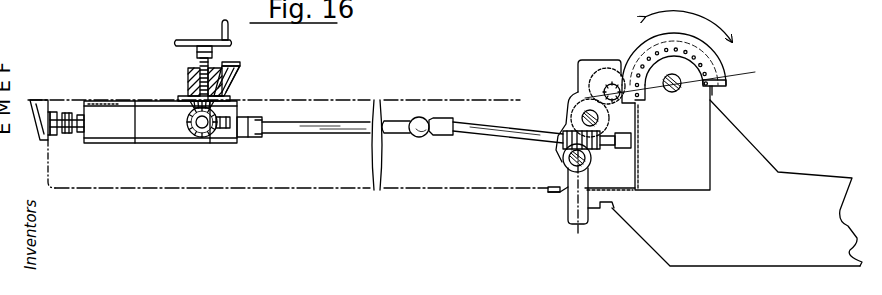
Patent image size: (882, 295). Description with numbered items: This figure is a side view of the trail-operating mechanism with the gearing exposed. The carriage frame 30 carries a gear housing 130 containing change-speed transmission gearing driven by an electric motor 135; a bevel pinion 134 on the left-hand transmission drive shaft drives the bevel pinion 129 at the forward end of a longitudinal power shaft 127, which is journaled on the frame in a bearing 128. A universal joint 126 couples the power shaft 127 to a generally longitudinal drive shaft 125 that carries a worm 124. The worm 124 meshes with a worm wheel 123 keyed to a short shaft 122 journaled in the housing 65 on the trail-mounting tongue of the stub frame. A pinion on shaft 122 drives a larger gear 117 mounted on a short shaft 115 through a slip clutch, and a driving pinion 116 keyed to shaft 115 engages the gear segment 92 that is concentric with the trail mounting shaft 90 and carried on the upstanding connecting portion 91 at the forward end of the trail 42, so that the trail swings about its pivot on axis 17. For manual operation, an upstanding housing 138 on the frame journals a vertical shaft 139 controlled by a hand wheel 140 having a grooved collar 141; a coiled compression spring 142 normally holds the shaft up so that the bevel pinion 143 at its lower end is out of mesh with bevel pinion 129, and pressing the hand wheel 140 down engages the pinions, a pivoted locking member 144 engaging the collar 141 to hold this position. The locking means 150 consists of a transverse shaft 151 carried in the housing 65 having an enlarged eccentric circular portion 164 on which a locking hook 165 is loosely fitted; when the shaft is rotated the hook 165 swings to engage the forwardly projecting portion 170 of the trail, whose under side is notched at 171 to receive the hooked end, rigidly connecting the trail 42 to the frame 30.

The axis 17 is at (673, 157).
The carriage frame 30 is at (350, 192).
The trail 42 is at (800, 170).
The housing 65 is at (582, 62).
The short shaft 90 is at (679, 89).
The connecting portion 91 is at (713, 87).
The gear segment 92 is at (734, 34).
The short shaft 115 is at (622, 107).
The driving pinion 116 is at (614, 82).
The larger gear 117 is at (600, 80).
The short shaft 122 is at (588, 110).
The worm wheel 123 is at (582, 115).
The worm 124 is at (608, 150).
The drive shaft 125 is at (484, 135).
The universal joint 126 is at (419, 137).
The power shaft 127 is at (318, 133).
The bearing 128 is at (258, 137).
The bevel pinion 129 is at (218, 143).
The gear housing 130 is at (100, 143).
The bevel pinion 134 is at (205, 143).
The electric motor 135 is at (40, 104).
The upstanding housing 138 is at (188, 83).
The vertical shaft 139 is at (222, 84).
The hand wheel 140 is at (188, 40).
The grooved collar 141 is at (213, 42).
The coiled compression spring 142 is at (190, 70).
The bevel pinion 143 is at (192, 104).
The locking member 144 is at (230, 62).
The locking means 150 is at (556, 214).
The transverse shaft 151 is at (566, 171).
The enlarged circular portion 164 is at (566, 154).
The locking hook 165 is at (568, 208).
The forwardly projecting portion 170 is at (616, 214).
The notch 171 is at (621, 202).